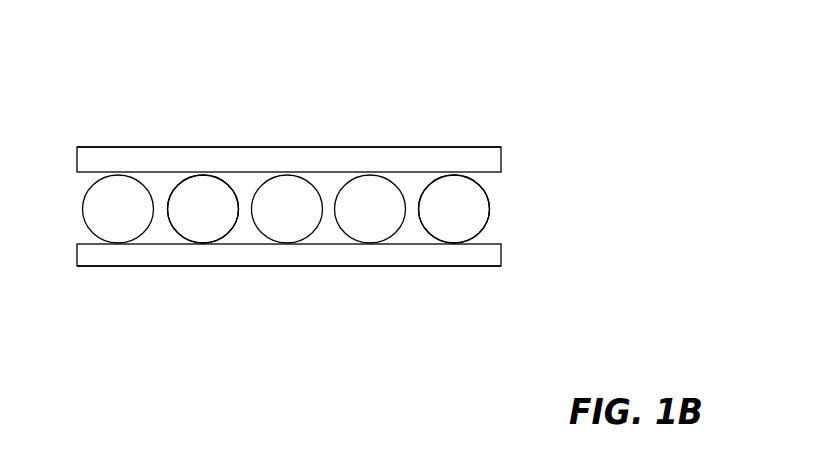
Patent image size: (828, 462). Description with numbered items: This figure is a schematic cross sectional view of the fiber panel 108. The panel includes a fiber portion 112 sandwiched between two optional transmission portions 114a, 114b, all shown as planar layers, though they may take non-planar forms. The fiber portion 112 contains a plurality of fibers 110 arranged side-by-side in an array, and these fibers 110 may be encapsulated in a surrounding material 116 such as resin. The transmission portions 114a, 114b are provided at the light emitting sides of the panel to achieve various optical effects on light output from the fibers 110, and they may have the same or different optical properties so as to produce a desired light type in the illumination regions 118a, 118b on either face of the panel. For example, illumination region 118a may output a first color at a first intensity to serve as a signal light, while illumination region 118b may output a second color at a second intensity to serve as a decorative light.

The fiber panel 108 is at (100, 76).
The fibers 110 is at (489, 206).
The fiber portion 112 is at (62, 220).
The transmission portion 114a is at (501, 148).
The transmission portion 114b is at (501, 265).
The surrounding material 116 is at (235, 232).
The illumination region 118a is at (290, 134).
The illumination region 118b is at (313, 321).